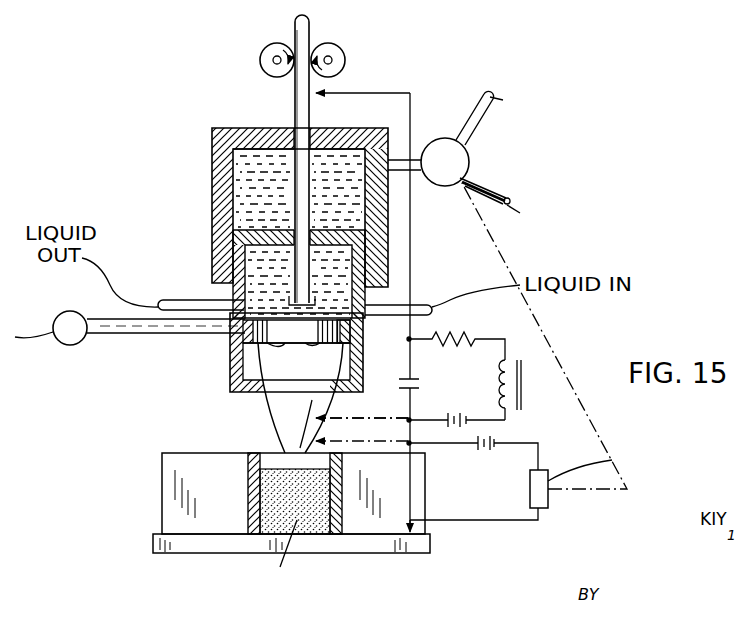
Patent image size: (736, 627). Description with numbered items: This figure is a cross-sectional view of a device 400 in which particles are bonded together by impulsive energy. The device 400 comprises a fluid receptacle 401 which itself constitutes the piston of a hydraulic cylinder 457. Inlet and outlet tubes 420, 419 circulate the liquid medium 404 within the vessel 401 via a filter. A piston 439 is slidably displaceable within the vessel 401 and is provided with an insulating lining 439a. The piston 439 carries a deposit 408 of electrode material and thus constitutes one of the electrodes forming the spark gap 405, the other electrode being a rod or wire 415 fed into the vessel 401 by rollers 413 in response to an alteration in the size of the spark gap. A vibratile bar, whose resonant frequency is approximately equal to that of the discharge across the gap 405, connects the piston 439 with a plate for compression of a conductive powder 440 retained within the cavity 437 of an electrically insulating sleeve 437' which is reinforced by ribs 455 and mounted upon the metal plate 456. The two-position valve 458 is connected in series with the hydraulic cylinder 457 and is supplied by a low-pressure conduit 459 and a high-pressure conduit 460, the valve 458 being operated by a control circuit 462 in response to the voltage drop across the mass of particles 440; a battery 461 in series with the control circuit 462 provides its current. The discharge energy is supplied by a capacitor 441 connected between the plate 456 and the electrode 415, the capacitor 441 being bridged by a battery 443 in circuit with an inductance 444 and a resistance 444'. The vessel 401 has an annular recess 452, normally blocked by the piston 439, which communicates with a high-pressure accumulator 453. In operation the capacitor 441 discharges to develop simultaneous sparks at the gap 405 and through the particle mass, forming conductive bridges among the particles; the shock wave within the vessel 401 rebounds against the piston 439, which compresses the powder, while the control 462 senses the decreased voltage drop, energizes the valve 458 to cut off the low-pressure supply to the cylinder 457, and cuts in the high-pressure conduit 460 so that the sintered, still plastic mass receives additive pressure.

The device 400 is at (132, 514).
The fluid receptacle 401 is at (232, 392).
The liquid medium 404 is at (380, 258).
The spark gap 405 is at (272, 277).
The deposit of electrode material 408 is at (230, 282).
The rollers 413 is at (342, 50).
The rod or wire 415 is at (292, 195).
The outlet tube 419 is at (182, 302).
The inlet tube 420 is at (422, 308).
The cavity 437 is at (287, 524).
The electrically insulating sleeve 437' is at (352, 524).
The piston 439 is at (237, 355).
The insulating lining 439a is at (262, 330).
The conductive powder 440 is at (285, 470).
The capacitor 441 is at (414, 383).
The battery 443 is at (453, 410).
The inductance 444 is at (529, 397).
The resistance 444' is at (460, 331).
The annular recess 452 is at (358, 345).
The high-pressure accumulator 453 is at (72, 316).
The ribs 455 is at (170, 528).
The metal plate 456 is at (432, 547).
The hydraulic cylinder 457 is at (213, 128).
The two-position valve 458 is at (470, 158).
The low-pressure conduit 459 is at (467, 100).
The high-pressure conduit 460 is at (497, 199).
The battery 461 is at (490, 452).
The control circuit 462 is at (548, 500).